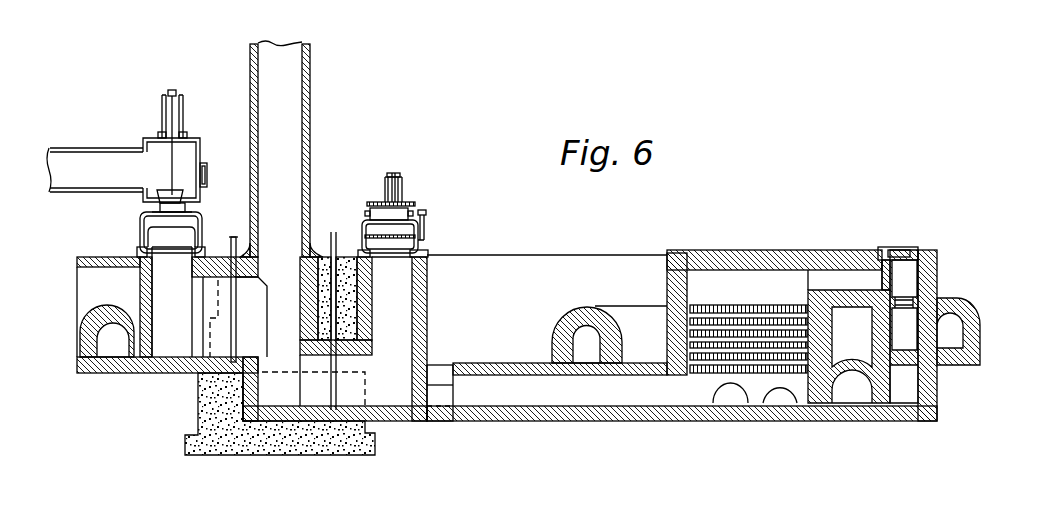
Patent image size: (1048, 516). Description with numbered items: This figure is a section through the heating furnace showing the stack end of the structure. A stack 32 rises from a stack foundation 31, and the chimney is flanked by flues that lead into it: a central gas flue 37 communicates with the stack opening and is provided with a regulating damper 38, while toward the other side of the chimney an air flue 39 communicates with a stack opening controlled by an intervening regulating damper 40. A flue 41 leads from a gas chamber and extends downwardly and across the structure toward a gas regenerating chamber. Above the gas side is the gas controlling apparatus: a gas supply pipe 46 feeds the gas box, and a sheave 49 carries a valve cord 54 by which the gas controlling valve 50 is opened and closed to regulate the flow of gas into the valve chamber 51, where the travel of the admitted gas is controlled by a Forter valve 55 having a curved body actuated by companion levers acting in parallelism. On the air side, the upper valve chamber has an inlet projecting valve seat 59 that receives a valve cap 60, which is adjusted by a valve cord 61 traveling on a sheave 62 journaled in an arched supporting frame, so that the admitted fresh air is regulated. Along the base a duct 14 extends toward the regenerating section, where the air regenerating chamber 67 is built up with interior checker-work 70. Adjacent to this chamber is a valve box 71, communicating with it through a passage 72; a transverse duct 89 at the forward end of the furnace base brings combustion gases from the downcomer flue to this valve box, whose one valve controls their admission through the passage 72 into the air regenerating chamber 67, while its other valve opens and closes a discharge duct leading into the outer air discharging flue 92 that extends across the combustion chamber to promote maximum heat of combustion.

The flue duct 14 is at (583, 422).
The stack foundation 31 is at (203, 407).
The stack 32 is at (287, 114).
The central gas flue 37 is at (203, 328).
The regulating damper 38 is at (233, 237).
The air flue 39 is at (400, 282).
The regulating damper 40 is at (335, 232).
The flue 41 is at (102, 340).
The gas supply pipe 46 is at (95, 170).
The sheave 49 is at (170, 92).
The gas controlling valve 50 is at (163, 193).
The valve chamber 51 is at (157, 220).
The valve cord 54 is at (162, 112).
The Forter valve 55 is at (147, 227).
The valve seat 59 is at (417, 207).
The valve cap 60 is at (415, 200).
The valve cord 61 is at (388, 187).
The sheave 62 is at (395, 172).
The air regenerating chamber 67 is at (713, 278).
The checker-work 70 is at (743, 307).
The valve box 71 is at (908, 278).
The passage 72 is at (848, 277).
The transverse duct 89 is at (860, 393).
The air discharging flue 92 is at (583, 337).